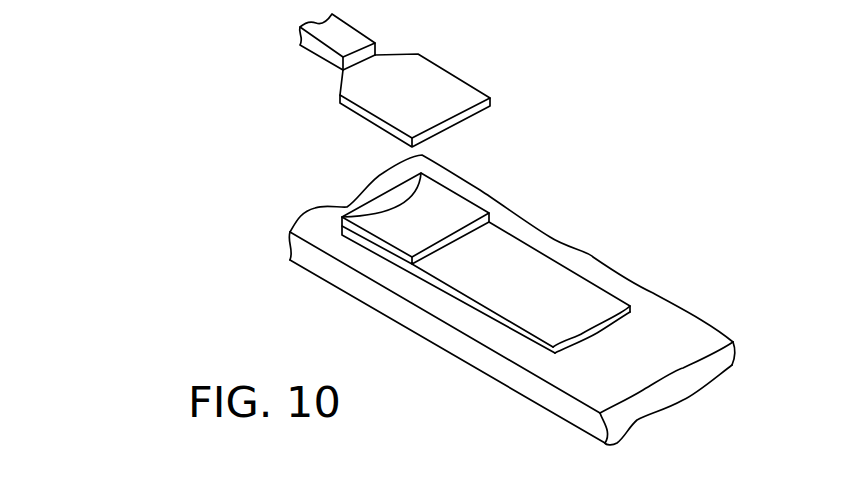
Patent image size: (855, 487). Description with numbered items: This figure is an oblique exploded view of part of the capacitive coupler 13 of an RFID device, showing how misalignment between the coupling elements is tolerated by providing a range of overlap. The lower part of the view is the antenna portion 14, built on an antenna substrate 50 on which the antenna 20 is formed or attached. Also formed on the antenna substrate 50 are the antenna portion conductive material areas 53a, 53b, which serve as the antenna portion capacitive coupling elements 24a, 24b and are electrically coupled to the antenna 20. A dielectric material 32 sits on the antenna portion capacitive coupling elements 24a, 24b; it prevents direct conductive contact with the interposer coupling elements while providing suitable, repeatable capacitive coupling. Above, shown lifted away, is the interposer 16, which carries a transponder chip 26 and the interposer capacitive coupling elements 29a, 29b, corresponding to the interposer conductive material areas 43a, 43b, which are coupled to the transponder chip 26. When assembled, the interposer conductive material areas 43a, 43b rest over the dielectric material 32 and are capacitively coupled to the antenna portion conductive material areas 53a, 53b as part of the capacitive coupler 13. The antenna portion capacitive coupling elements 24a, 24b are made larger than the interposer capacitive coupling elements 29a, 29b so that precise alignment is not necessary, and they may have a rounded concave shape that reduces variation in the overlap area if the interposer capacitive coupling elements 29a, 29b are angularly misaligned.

The capacitive coupler 13 is at (508, 125).
The antenna portion 14 is at (568, 222).
The interposer 16 is at (272, 67).
The antenna 20 is at (578, 300).
The antenna portion capacitive coupling element 24a is at (364, 254).
The antenna portion capacitive coupling element 24b is at (364, 254).
The transponder chip 26 is at (347, 38).
The interposer capacitive coupling element 29a is at (569, 90).
The interposer capacitive coupling element 29b is at (569, 90).
The dielectric material 32 is at (390, 205).
The interposer conductive material area 43a is at (569, 90).
The interposer conductive material area 43b is at (445, 80).
The antenna substrate 50 is at (587, 422).
The antenna portion conductive material area 53a is at (364, 254).
The antenna portion conductive material area 53b is at (363, 253).